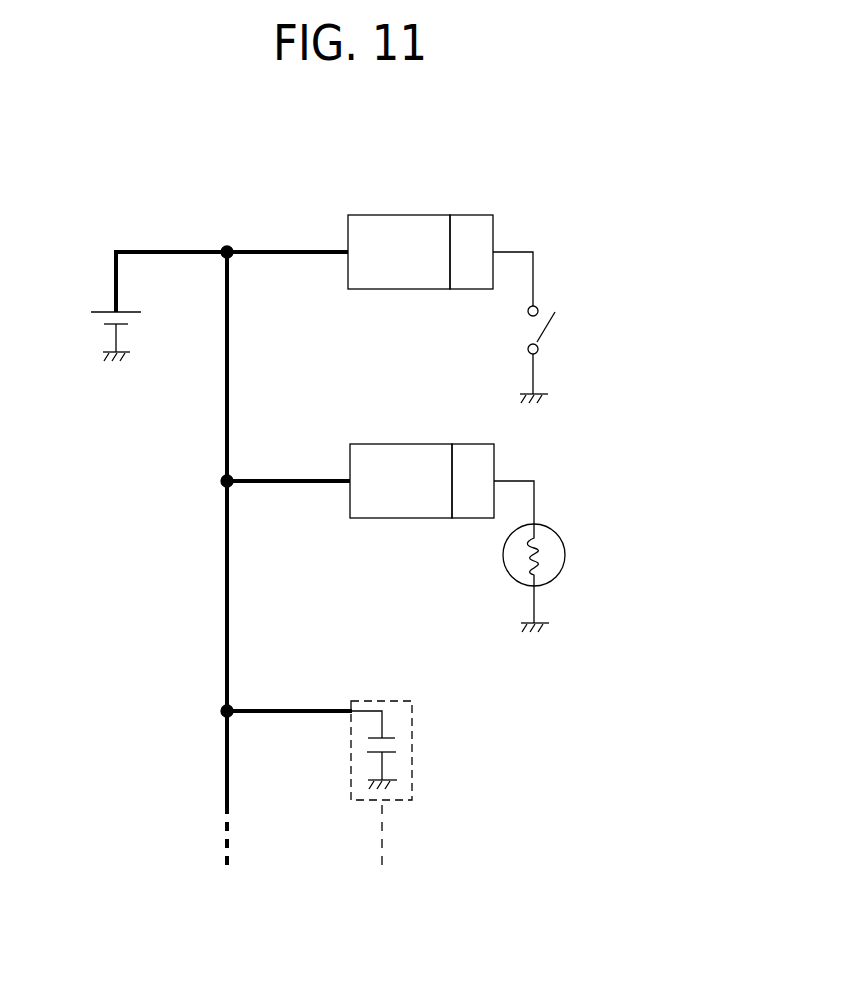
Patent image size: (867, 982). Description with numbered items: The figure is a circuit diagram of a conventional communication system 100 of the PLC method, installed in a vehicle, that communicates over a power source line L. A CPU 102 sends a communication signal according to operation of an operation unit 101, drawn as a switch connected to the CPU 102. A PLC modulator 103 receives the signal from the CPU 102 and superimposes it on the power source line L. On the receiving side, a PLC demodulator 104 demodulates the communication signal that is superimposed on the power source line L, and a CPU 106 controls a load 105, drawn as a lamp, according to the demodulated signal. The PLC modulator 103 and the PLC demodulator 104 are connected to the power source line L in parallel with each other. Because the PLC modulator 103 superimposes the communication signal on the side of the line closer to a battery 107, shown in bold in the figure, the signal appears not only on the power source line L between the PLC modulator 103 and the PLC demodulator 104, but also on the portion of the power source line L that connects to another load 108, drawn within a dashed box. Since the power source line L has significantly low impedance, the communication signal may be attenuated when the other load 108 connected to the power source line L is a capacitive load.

The communication system 100 is at (562, 218).
The power source line L is at (292, 250).
The operation unit 101 is at (550, 324).
The CPU 102 is at (472, 215).
The PLC modulator 103 is at (397, 215).
The PLC demodulator 104 is at (397, 444).
The load 105 is at (566, 555).
The CPU 106 is at (472, 444).
The battery 107 is at (104, 311).
The load 108 is at (390, 735).